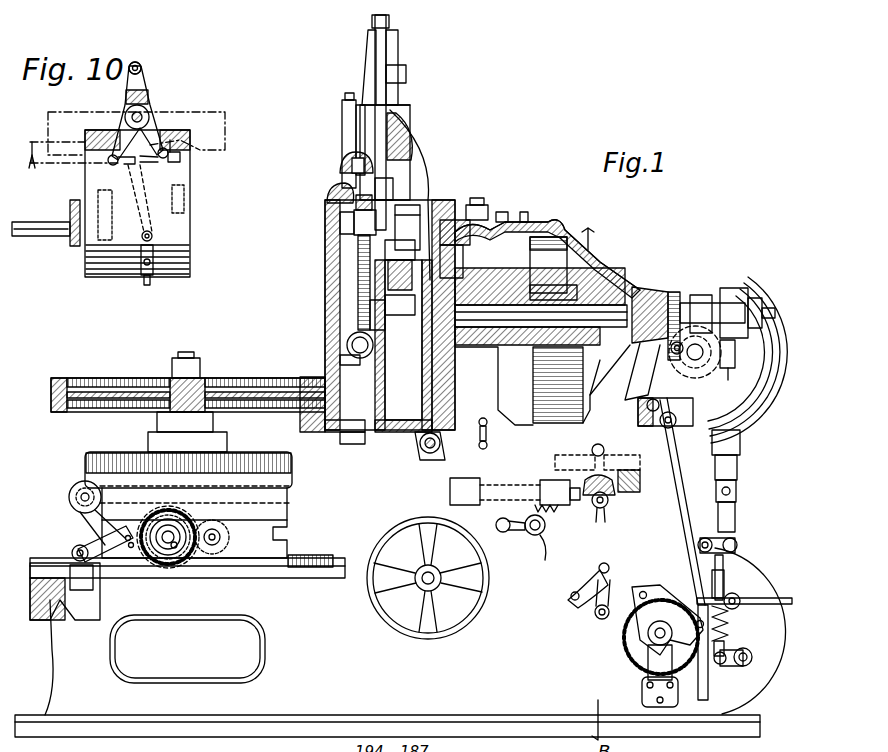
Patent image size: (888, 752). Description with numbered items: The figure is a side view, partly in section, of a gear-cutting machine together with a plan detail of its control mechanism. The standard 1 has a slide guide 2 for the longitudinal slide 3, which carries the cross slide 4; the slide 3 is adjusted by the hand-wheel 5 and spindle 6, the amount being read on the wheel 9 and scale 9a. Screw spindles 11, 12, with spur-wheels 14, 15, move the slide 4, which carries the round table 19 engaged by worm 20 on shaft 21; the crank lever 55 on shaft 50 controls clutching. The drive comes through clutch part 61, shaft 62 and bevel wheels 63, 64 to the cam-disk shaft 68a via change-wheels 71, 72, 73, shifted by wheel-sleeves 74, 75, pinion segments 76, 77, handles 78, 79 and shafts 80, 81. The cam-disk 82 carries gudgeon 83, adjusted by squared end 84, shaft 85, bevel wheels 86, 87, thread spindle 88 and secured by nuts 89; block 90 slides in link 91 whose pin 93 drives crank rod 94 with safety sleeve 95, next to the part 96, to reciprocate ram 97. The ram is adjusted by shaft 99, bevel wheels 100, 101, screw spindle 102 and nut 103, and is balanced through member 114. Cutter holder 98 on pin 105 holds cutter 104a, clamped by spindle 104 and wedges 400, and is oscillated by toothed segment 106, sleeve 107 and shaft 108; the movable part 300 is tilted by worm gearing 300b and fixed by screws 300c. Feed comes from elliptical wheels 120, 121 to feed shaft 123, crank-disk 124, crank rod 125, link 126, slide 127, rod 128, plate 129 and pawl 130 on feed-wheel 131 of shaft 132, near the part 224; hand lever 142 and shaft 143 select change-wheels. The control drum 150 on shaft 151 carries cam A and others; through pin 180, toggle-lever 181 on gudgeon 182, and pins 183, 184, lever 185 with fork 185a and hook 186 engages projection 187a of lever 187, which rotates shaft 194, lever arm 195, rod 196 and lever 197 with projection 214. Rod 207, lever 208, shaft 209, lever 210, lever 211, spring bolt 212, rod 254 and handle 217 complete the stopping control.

In FIG. 1, the standard 1 is at (62, 660).
In FIG. 1, the slide guide 2 is at (345, 575).
In FIG. 1, the longitudinal slide 3 is at (278, 575).
In FIG. 1, the cross slide 4 is at (290, 522).
In FIG. 1, the hand-wheel 5 is at (408, 625).
In FIG. 1, the spindle 6 is at (425, 585).
In FIG. 1, the wheel 9 is at (392, 605).
In FIG. 1, the scale 9a is at (310, 570).
In FIG. 1, the screw spindle 11 is at (226, 540).
In FIG. 1, the screw spindle 12 is at (168, 542).
In FIG. 1, the spur-wheel 14 is at (205, 558).
In FIG. 1, the spur-wheel 15 is at (180, 558).
In FIG. 1, the round table 19 is at (292, 458).
In FIG. 1, the worm 20 is at (68, 497).
In FIG. 1, the shaft 21 is at (88, 508).
In FIG. 1, the shaft 50 is at (85, 562).
In FIG. 1, the crank lever 55 is at (96, 560).
In FIG. 1, the inner part of friction clutch 61 is at (767, 378).
In FIG. 1, the shaft 62 is at (765, 415).
In FIG. 1, the bevel wheel 63 is at (755, 395).
In FIG. 1, the bevel wheel 64 is at (768, 385).
In FIG. 1, the cam-disk shaft 68a is at (622, 292).
In FIG. 1, the change-wheel 71 is at (595, 400).
In FIG. 1, the change-wheel 72 is at (550, 423).
In FIG. 1, the change-wheel 73 is at (552, 237).
In FIG. 1, the toothed wheel-sleeve 74 is at (640, 480).
In FIG. 1, the toothed wheel-sleeve 75 is at (540, 495).
In FIG. 1, the pinion segment 76 is at (596, 498).
In FIG. 1, the pinion segment 77 is at (538, 535).
In FIG. 1, the handle 78 is at (592, 455).
In FIG. 1, the handle 79 is at (508, 532).
In FIG. 1, the shaft 80 is at (604, 510).
In FIG. 1, the shaft 81 is at (542, 550).
In FIG. 1, the cam-disk 82 is at (478, 198).
In FIG. 1, the gudgeon 83 is at (386, 380).
In FIG. 1, the squared end 84 is at (746, 316).
In FIG. 1, the shaft 85 is at (672, 298).
In FIG. 1, the bevel wheel 86 is at (538, 305).
In FIG. 1, the bevel wheel 87 is at (462, 262).
In FIG. 1, the thread spindle 88 is at (388, 270).
In FIG. 1, the nuts 89 is at (358, 245).
In FIG. 1, the block 90 is at (430, 312).
In FIG. 1, the link 91 is at (372, 320).
In FIG. 1, the pin 93 is at (385, 248).
In FIG. 1, the crank rod 94 is at (500, 220).
In FIG. 1, the safety break sleeve 95 is at (398, 205).
In FIG. 1, the plate 96 is at (393, 200).
In FIG. 1, the ram 97 is at (330, 192).
In FIG. 1, the cutter holder 98 is at (352, 444).
In FIG. 1, the shaft 99 is at (342, 160).
In FIG. 1, the bevel wheel 100 is at (352, 153).
In FIG. 1, the bevel wheel 101 is at (372, 200).
In FIG. 1, the screw spindle 102 is at (352, 222).
In FIG. 1, the nut 103 is at (330, 215).
In FIG. 1, the spindle 104 is at (325, 385).
In FIG. 1, the multiple-tooth cutter 104a is at (330, 425).
In FIG. 1, the pin 105 is at (388, 395).
In FIG. 1, the toothed segment 106 is at (340, 357).
In FIG. 1, the sleeve 107 is at (348, 348).
In FIG. 1, the shaft 108 is at (350, 342).
In FIG. 1, the member 114 is at (396, 110).
In FIG. 1, the elliptical spur-wheel 120 is at (685, 303).
In FIG. 1, the elliptical wheel 121 is at (655, 355).
In FIG. 1, the feed shaft 123 is at (745, 302).
In FIG. 1, the feed crank-disk 124 is at (700, 352).
In FIG. 1, the crank rod 125 is at (647, 405).
In FIG. 1, the link 126 is at (645, 418).
In FIG. 1, the slide 127 is at (660, 425).
In FIG. 1, the rod 128 is at (680, 510).
In FIG. 1, the plate 129 is at (665, 598).
In FIG. 1, the pawl 130 is at (655, 630).
In FIG. 1, the feed-wheel 131 is at (642, 650).
In FIG. 1, the shaft 132 is at (642, 650).
In FIG. 1, the hand lever 142 is at (580, 615).
In FIG. 1, the shaft 143 is at (596, 616).
In FIG. 10, the drum 150 is at (90, 258).
In FIG. 1, the shaft 151 is at (742, 600).
In FIG. 10, the vertical pin 180 is at (130, 117).
In FIG. 10, the toggle-lever 181 is at (153, 237).
In FIG. 10, the gudgeon 182 is at (150, 277).
In FIG. 10, the pin 183 is at (112, 166).
In FIG. 10, the pin 184 is at (168, 162).
In FIG. 10, the lever 185 is at (147, 120).
In FIG. 10, the fork-shaped part 185a is at (141, 70).
In FIG. 10, the hook-like projection 186 is at (181, 158).
In FIG. 10, the lever 187 is at (186, 212).
In FIG. 10, the projection 187a is at (183, 140).
In FIG. 10, the shaft 194 is at (32, 166).
In FIG. 1, the shaft 194 is at (712, 550).
In FIG. 1, the lever arm 195 is at (738, 545).
In FIG. 1, the vertical rod 196 is at (738, 488).
In FIG. 1, the lever 197 is at (742, 440).
In FIG. 1, the rod 207 is at (730, 618).
In FIG. 1, the lever 208 is at (735, 666).
In FIG. 10, the shaft 209 is at (40, 222).
In FIG. 1, the shaft 209 is at (752, 658).
In FIG. 10, the lever 210 is at (98, 205).
In FIG. 1, the lever 211 is at (718, 340).
In FIG. 1, the spring bolt 212 is at (735, 355).
In FIG. 1, the projection 214 is at (740, 462).
In FIG. 1, the handle 217 is at (482, 450).
In FIG. 1, the pin 224 is at (670, 292).
In FIG. 1, the rod 254 is at (737, 512).
In FIG. 1, the movable part 300 is at (414, 137).
In FIG. 1, the worm gearing 300b is at (424, 445).
In FIG. 1, the screws 300c is at (523, 212).
In FIG. 1, the wedges 400 is at (300, 378).
In FIG. 1, the cam A is at (596, 236).